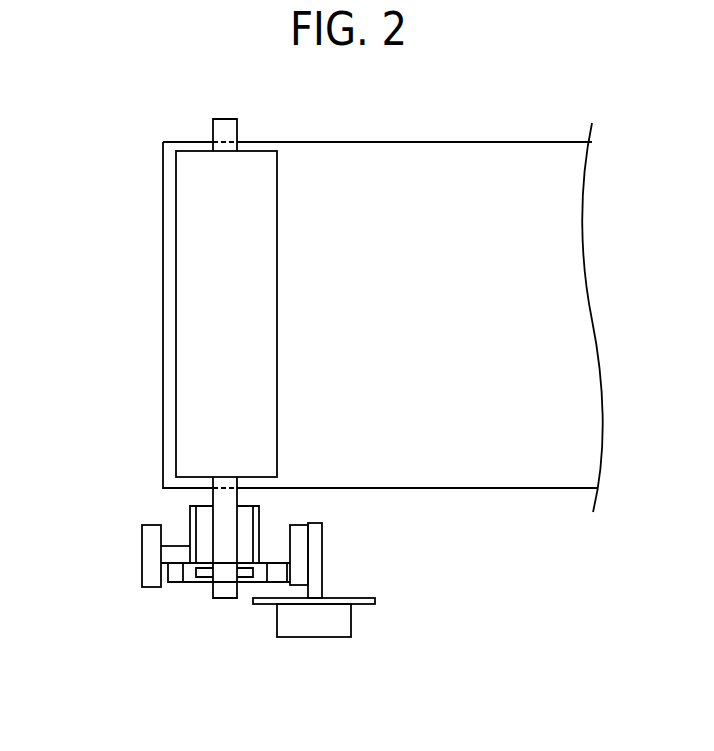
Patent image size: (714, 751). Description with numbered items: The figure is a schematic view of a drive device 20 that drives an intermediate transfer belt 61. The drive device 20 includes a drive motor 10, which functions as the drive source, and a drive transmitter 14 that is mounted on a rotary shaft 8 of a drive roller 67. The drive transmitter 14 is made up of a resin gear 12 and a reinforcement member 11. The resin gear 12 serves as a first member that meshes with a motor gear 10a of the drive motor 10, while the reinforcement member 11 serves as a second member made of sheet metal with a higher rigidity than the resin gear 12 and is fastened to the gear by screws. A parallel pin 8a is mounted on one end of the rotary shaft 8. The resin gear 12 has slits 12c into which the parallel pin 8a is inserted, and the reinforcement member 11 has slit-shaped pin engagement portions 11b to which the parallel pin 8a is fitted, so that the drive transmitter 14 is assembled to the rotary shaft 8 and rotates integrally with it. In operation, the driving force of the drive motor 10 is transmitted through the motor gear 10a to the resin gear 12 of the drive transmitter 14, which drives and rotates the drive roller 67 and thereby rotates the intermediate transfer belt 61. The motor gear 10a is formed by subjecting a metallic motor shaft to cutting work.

The intermediate transfer belt 61 is at (557, 400).
The drive roller 67 is at (278, 180).
The rotary shaft 8 is at (238, 499).
The parallel pin 8a is at (203, 583).
The slits 12c is at (206, 517).
The resin gear 12 is at (143, 552).
The reinforcement member 11 is at (175, 584).
The pin engagement portions 11b is at (241, 583).
The drive transmitter 14 is at (73, 548).
The motor gear 10a is at (322, 542).
The drive motor 10 is at (352, 622).
The drive device 20 is at (163, 657).